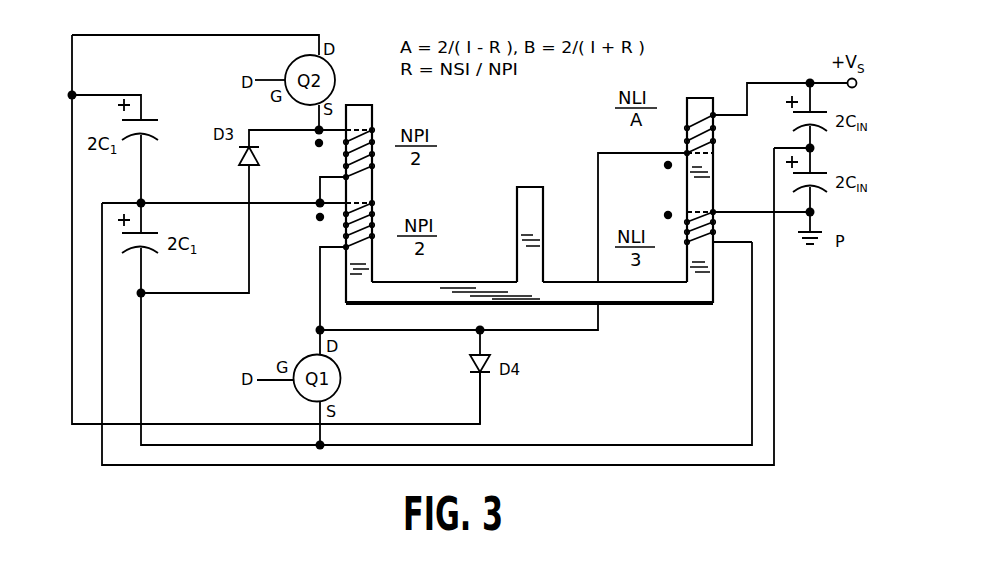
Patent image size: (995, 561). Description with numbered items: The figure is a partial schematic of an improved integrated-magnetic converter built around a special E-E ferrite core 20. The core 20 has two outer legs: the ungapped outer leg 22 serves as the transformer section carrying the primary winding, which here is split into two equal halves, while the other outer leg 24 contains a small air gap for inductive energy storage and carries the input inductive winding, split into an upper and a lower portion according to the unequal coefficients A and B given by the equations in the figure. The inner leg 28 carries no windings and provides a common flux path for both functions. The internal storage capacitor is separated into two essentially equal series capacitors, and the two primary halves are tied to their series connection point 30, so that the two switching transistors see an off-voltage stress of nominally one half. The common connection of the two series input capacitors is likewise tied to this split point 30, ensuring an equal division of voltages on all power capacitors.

The E-E ferrite core 20 is at (692, 302).
The outer leg 22 is at (362, 190).
The outer leg 24 is at (698, 193).
The inner leg 28 is at (540, 205).
The series connection point 30 is at (178, 202).